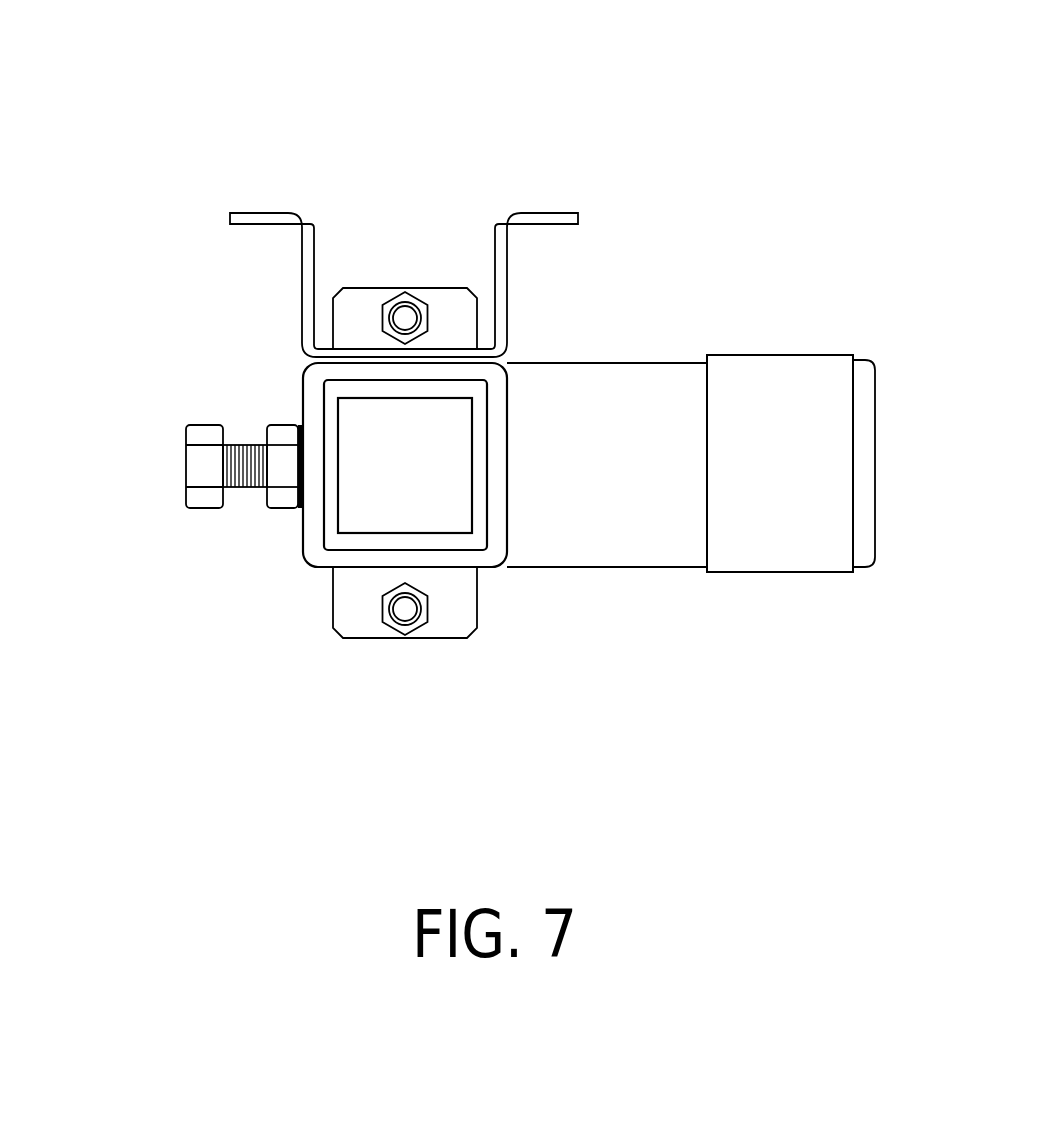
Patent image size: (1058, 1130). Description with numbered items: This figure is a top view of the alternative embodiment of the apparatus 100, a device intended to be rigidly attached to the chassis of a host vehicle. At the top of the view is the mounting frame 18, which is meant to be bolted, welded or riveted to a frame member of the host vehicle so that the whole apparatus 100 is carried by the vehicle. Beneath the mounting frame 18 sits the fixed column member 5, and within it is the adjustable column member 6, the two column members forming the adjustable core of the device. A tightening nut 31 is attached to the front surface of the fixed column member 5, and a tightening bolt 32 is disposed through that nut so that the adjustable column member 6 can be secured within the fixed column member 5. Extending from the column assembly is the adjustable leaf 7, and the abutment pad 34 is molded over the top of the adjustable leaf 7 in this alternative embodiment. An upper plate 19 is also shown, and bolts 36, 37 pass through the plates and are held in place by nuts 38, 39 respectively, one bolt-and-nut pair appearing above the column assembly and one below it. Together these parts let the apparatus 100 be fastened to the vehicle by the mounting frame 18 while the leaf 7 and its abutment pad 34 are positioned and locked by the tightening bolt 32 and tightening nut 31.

The apparatus 100 is at (580, 177).
The fixed column member 5 is at (310, 390).
The adjustable column member 6 is at (335, 537).
The adjustable leaf 7 is at (600, 527).
The mounting frame 18 is at (307, 257).
The upper plate 19 is at (358, 613).
The tightening nut 31 is at (282, 468).
The tightening bolt 32 is at (207, 467).
The abutment pad 34 is at (797, 400).
The bolt 36 is at (410, 612).
The bolt 37 is at (403, 318).
The nut 38 is at (405, 634).
The nut 39 is at (403, 297).